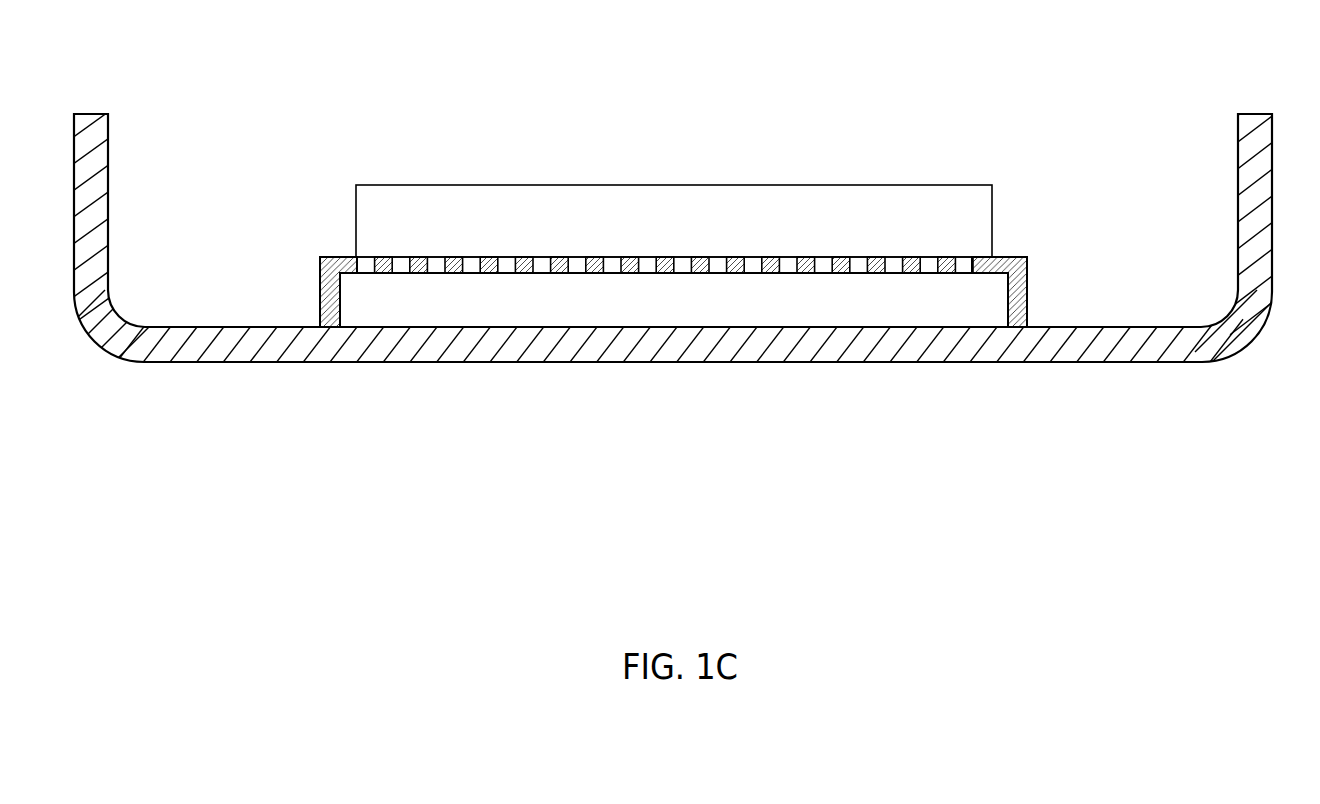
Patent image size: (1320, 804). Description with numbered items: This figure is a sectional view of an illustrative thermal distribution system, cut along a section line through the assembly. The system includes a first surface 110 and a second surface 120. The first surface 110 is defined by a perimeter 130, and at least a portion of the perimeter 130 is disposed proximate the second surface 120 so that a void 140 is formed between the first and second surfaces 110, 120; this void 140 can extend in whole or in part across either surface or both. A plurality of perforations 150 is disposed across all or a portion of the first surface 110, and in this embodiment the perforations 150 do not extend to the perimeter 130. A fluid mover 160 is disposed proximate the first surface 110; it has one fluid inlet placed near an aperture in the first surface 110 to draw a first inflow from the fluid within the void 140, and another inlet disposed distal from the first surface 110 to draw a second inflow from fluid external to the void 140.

The first surface 110 is at (323, 255).
The second surface 120 is at (493, 348).
The perimeter 130 is at (1027, 288).
The void 140 is at (678, 302).
The plurality of perforations 150 is at (718, 260).
The fluid mover 160 is at (455, 185).